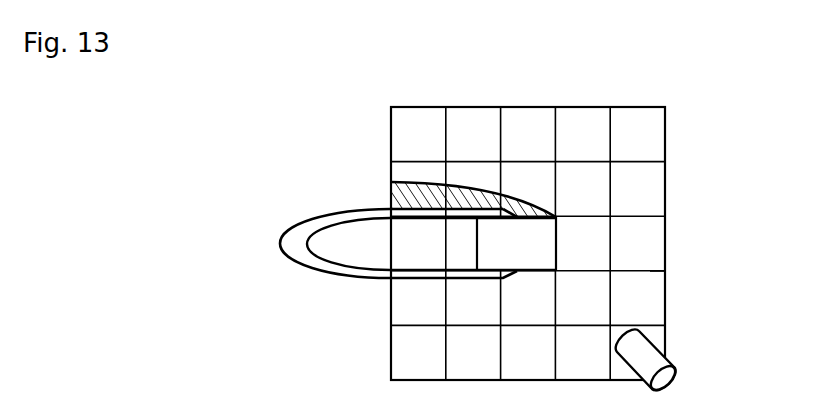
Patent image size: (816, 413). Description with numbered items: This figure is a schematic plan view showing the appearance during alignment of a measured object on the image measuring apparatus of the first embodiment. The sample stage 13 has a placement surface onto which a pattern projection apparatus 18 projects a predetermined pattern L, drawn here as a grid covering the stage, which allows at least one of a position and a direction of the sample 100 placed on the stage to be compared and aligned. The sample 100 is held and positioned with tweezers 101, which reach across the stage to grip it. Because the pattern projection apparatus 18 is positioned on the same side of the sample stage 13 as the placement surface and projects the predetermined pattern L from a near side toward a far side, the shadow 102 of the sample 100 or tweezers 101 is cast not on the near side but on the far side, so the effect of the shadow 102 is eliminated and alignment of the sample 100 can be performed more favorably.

The sample stage 13 is at (390, 136).
The sample 100 is at (538, 241).
The tweezers 101 is at (290, 246).
The shadow 102 is at (461, 195).
The predetermined pattern L is at (650, 271).
The pattern projection apparatus 18 is at (667, 380).